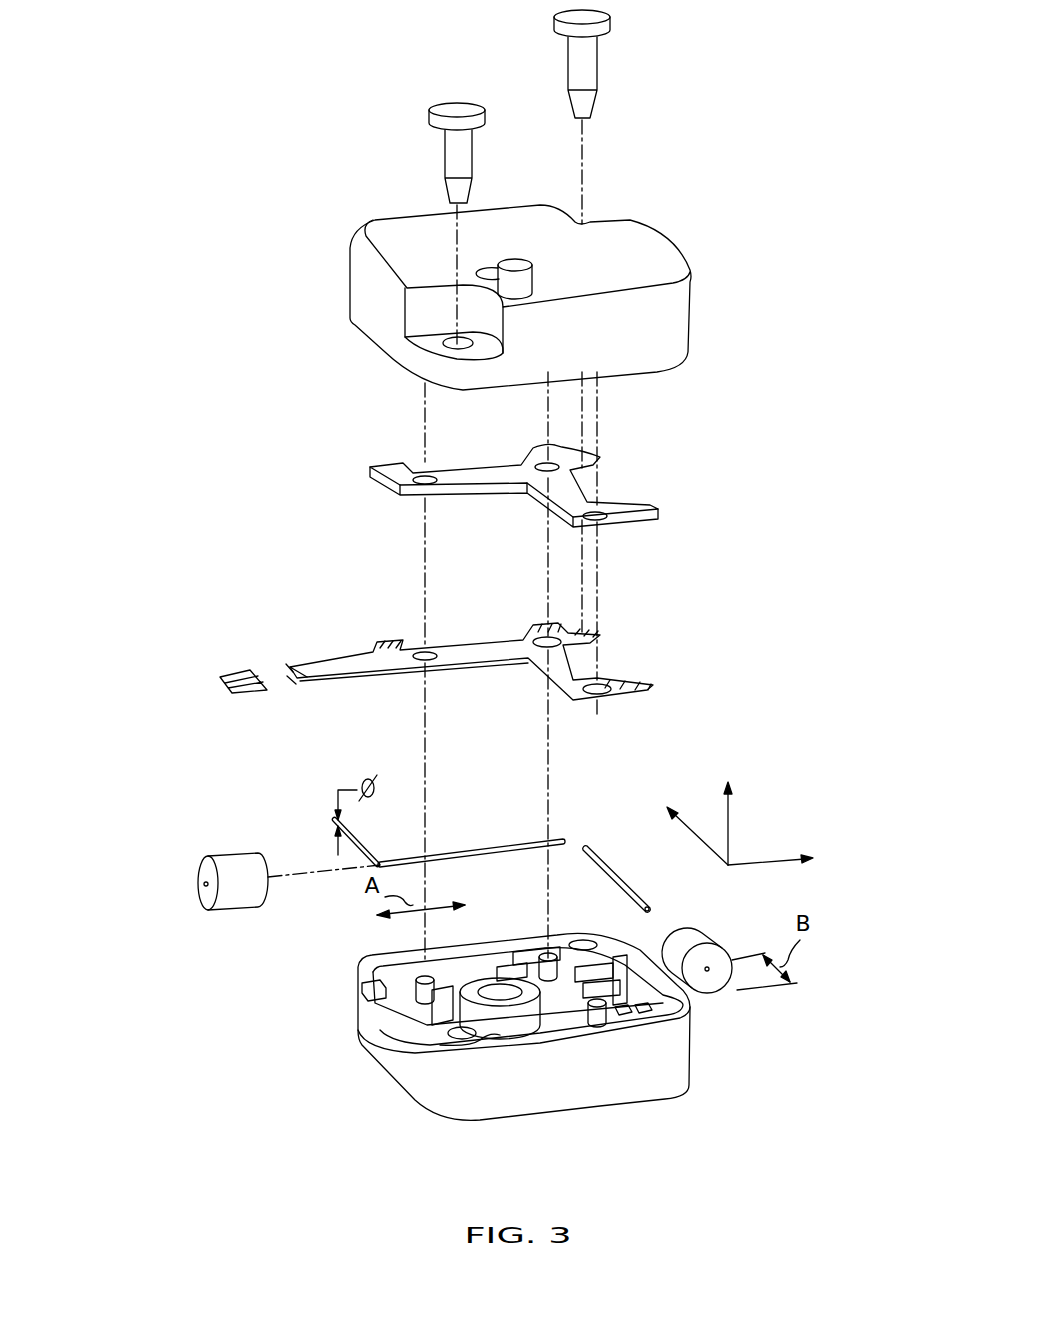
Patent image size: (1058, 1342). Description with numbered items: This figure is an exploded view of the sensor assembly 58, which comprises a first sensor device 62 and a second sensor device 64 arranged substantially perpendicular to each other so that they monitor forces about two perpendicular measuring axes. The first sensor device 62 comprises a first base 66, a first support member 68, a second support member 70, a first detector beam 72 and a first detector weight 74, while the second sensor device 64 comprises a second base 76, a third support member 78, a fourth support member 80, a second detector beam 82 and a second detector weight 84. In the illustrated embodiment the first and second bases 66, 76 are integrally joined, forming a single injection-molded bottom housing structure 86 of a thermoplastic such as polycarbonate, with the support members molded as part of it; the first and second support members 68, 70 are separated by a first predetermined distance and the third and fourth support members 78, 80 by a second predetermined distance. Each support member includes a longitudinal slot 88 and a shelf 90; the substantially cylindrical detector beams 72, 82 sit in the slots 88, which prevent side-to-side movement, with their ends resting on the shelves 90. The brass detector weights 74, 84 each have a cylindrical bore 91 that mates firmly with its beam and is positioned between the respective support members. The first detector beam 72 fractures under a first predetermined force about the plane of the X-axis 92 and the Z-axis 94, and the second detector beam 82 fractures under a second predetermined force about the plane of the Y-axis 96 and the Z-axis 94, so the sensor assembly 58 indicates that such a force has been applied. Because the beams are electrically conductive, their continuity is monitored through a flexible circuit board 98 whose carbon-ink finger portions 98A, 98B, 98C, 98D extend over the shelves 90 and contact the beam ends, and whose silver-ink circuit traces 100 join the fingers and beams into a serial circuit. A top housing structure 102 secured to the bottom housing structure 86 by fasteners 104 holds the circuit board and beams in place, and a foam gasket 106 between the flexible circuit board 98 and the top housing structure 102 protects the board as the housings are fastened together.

The sensor assembly 58 is at (180, 490).
The first sensor device 62 is at (307, 932).
The second sensor device 64 is at (807, 895).
The first base 66 is at (457, 960).
The first support member 68 is at (420, 957).
The second support member 70 is at (508, 957).
The first detector beam 72 is at (490, 848).
The first detector weight 74 is at (225, 858).
The second base 76 is at (643, 993).
The third support member 78 is at (670, 933).
The fourth support member 80 is at (670, 1017).
The second detector beam 82 is at (610, 867).
The second detector weight 84 is at (698, 947).
The bottom housing structure 86 is at (555, 1090).
The longitudinal slot 88 is at (412, 970).
The shelf 90 is at (360, 985).
The cylindrical bore 91 is at (206, 883).
The X-axis 92 is at (707, 840).
The Z-axis 94 is at (730, 822).
The Y-axis 96 is at (768, 860).
The flexible circuit board 98 is at (218, 679).
The finger portion 98A is at (387, 641).
The finger portion 98B is at (540, 622).
The finger portion 98C is at (600, 632).
The finger portion 98D is at (655, 683).
The circuit traces 100 is at (510, 635).
The top housing structure 102 is at (670, 262).
The fasteners 104 is at (570, 62).
The foam gasket 106 is at (645, 510).